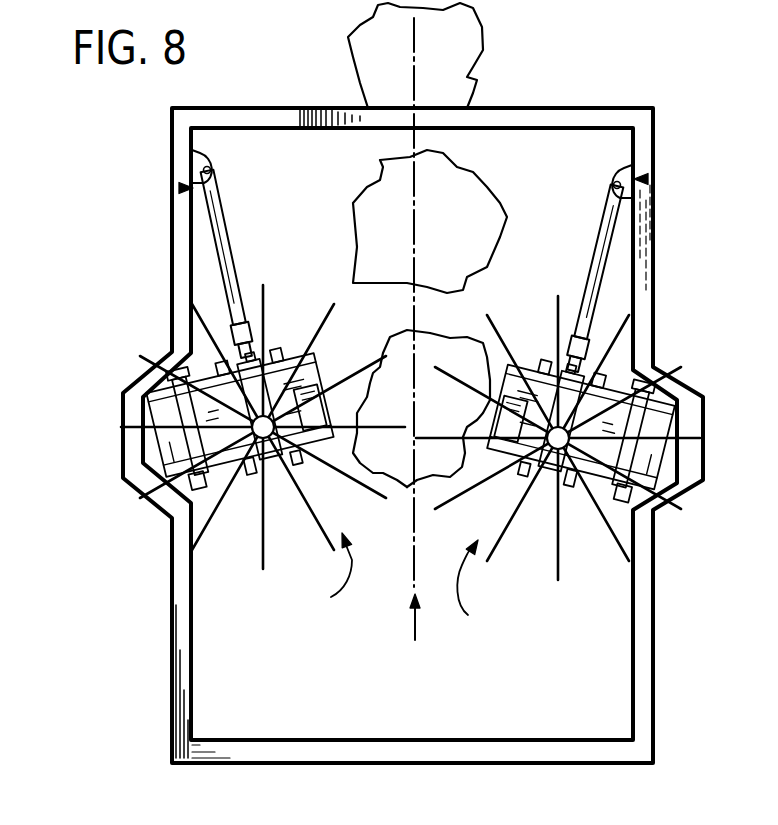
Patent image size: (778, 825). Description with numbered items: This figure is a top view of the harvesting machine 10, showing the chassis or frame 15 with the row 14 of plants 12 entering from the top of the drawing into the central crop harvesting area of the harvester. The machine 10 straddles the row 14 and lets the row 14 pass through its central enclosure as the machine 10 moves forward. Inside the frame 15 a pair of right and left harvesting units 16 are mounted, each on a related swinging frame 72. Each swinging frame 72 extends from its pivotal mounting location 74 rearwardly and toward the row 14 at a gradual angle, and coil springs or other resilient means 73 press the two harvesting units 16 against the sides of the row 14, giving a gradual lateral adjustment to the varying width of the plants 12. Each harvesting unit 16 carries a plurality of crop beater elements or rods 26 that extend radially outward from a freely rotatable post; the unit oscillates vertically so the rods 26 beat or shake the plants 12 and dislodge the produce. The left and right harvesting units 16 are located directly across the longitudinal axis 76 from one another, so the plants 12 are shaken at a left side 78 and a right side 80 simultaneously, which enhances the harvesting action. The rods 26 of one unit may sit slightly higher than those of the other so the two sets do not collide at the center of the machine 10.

The harvesting machine 10 is at (150, 152).
The plants 12 is at (473, 172).
The row 14 is at (415, 640).
The chassis or frame 15 is at (172, 172).
The harvesting unit 16 is at (403, 583).
The crop beater elements or rods 26 is at (305, 508).
The swinging frame 72 is at (227, 213).
The coil springs or resilient means 73 is at (208, 166).
The pivotal mounting location 74 is at (180, 188).
The longitudinal axis 76 is at (414, 550).
The left side 78 is at (373, 373).
The right side 80 is at (487, 362).